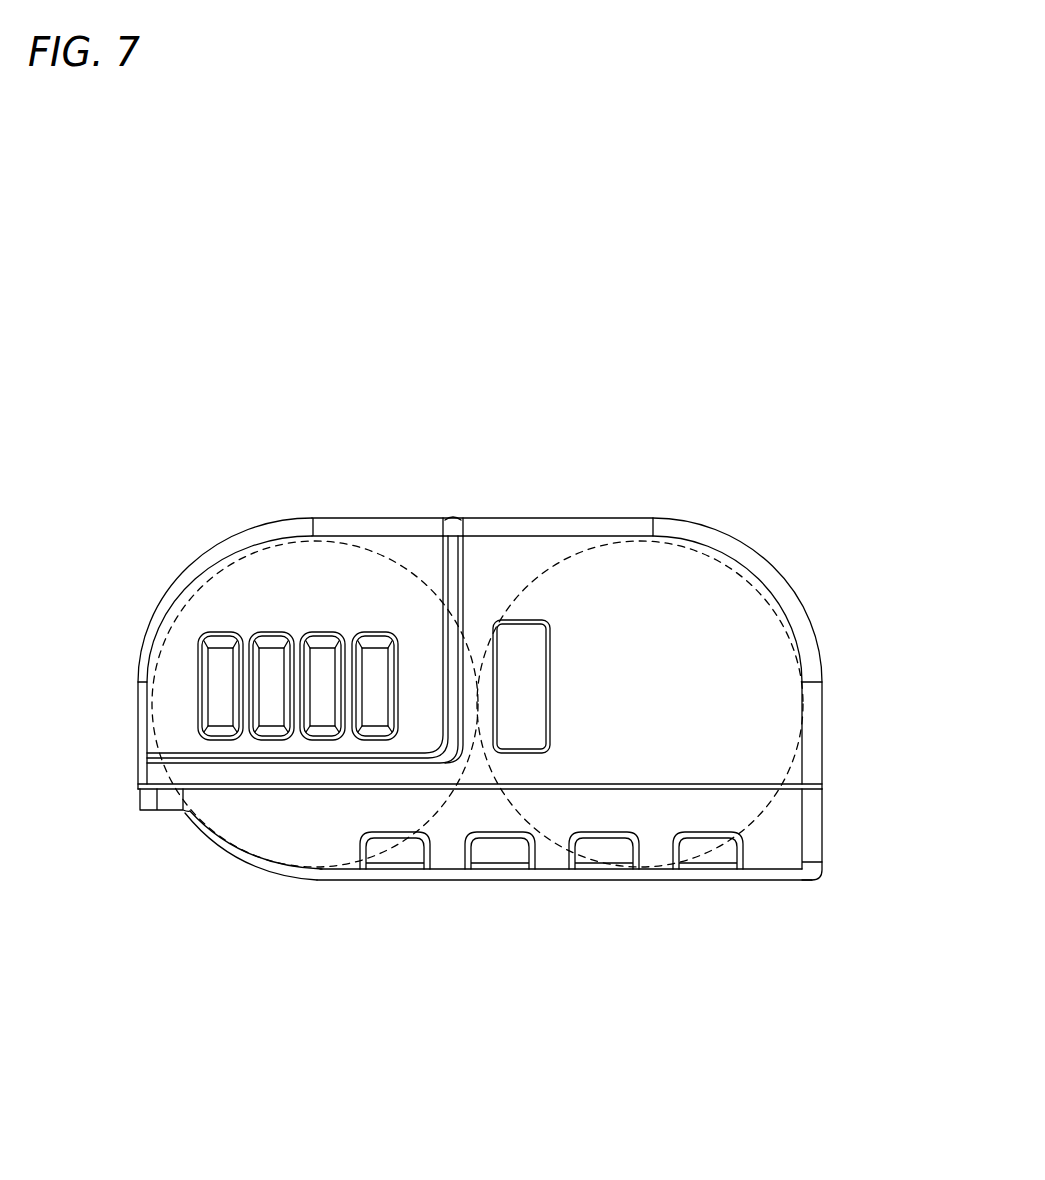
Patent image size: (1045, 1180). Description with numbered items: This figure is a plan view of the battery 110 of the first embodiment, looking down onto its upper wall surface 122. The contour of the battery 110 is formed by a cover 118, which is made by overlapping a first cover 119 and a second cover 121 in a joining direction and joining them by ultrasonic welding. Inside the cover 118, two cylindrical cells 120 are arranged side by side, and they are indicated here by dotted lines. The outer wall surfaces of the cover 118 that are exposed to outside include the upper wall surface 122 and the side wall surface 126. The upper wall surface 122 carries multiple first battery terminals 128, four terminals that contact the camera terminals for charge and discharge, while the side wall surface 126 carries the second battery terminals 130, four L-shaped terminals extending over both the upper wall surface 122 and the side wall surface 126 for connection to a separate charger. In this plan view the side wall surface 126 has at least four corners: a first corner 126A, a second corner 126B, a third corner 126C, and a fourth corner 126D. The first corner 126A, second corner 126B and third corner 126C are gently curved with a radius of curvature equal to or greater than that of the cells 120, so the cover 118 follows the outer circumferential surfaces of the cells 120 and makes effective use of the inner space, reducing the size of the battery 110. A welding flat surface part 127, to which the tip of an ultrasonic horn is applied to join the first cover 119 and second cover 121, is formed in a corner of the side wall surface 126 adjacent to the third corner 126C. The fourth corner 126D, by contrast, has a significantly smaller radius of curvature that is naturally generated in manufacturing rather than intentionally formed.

The battery 110 is at (512, 674).
The cover 118 is at (302, 649).
The first cover 119 is at (838, 669).
The cylindrical cell 120 is at (378, 555).
The second cover 121 is at (838, 838).
The upper wall surface 122 is at (361, 581).
The side wall surface 126 is at (323, 517).
The first corner 126A is at (187, 550).
The second corner 126B is at (777, 550).
The third corner 126C is at (227, 853).
The fourth corner 126D is at (810, 880).
The welding flat surface part 127 is at (181, 810).
The first battery terminals 128 is at (300, 628).
The second battery terminals 130 is at (546, 904).